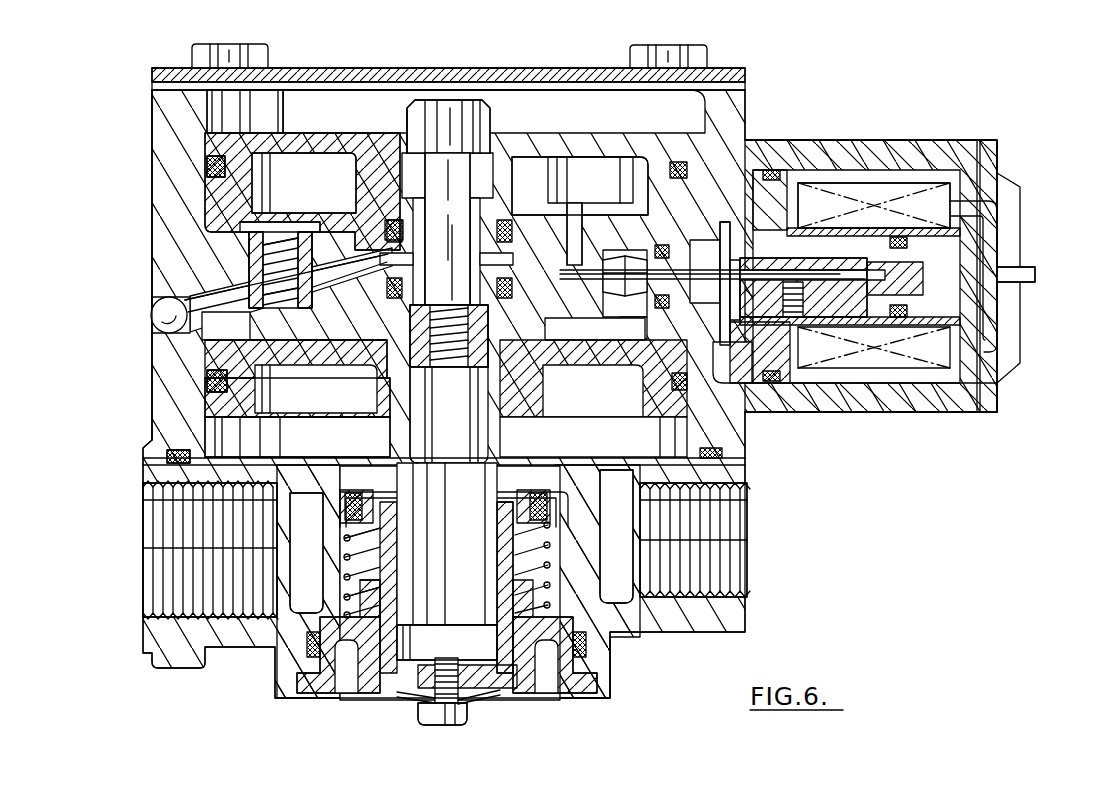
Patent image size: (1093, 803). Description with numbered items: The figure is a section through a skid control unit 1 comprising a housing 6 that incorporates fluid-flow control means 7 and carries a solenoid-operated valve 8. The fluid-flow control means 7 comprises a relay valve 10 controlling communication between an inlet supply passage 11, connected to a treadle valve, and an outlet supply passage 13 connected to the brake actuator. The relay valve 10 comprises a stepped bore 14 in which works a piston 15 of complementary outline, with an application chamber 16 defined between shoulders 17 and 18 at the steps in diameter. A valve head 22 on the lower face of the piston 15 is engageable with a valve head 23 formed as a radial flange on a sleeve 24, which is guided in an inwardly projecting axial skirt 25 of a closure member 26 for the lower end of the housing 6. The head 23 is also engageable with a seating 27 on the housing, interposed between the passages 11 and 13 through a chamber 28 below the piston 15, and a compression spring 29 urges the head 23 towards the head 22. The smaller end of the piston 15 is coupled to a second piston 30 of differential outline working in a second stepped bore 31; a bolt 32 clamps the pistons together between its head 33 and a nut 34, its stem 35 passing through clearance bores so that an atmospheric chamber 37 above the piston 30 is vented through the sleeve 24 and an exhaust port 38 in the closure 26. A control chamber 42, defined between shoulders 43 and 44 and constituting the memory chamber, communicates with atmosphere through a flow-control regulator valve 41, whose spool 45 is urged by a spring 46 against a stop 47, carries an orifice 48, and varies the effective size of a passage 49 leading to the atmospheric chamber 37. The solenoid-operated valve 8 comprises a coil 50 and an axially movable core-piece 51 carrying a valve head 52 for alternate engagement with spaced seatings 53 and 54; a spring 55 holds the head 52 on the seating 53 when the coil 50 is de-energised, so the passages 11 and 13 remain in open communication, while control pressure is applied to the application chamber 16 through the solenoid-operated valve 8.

The unit 1 is at (567, 76).
The housing 6 is at (205, 115).
The fluid-flow control means 7 is at (410, 410).
The solenoid-operated valve 8 is at (830, 250).
The relay valve 10 is at (395, 640).
The inlet supply passage 11 is at (185, 570).
The outlet supply passage 13 is at (692, 565).
The bore 14 is at (170, 455).
The piston 15 is at (237, 400).
The application chamber 16 is at (292, 336).
The shoulder 17 is at (240, 340).
The shoulder 18 is at (207, 381).
The valve head 22 is at (495, 490).
The valve head 23 is at (575, 508).
The sleeve 24 is at (395, 565).
The axial skirt 25 is at (510, 650).
The closure member 26 is at (330, 680).
The seating 27 is at (335, 495).
The chamber 28 is at (297, 392).
The compression spring 29 is at (340, 600).
The second piston 30 is at (215, 197).
The second stepped bore 31 is at (212, 127).
The bolt 32 is at (428, 118).
The head 33 is at (410, 125).
The nut 34 is at (430, 362).
The stem 35 is at (440, 170).
The atmospheric chamber 37 is at (345, 103).
The exhaust port 38 is at (393, 685).
The flow-control regulator valve 41 is at (270, 232).
The control chamber 42 is at (240, 222).
The shoulder 43 is at (250, 246).
The shoulder 44 is at (210, 168).
The spool 45 is at (225, 270).
The spring 46 is at (175, 298).
The stop 47 is at (308, 232).
The orifice 48 is at (280, 232).
The passage 49 is at (367, 265).
The coil 50 is at (862, 190).
The core-piece 51 is at (840, 298).
The valve head 52 is at (628, 258).
The valve seating 53 is at (612, 250).
The valve seating 54 is at (725, 300).
The spring 55 is at (925, 283).